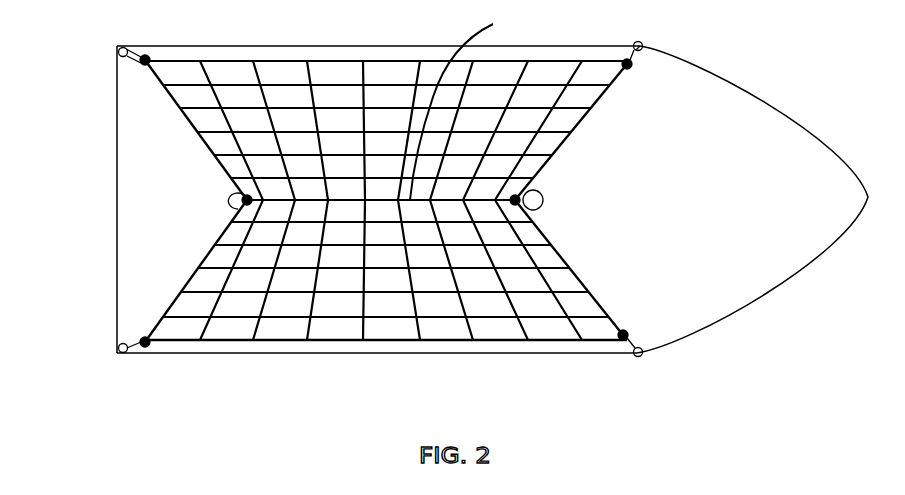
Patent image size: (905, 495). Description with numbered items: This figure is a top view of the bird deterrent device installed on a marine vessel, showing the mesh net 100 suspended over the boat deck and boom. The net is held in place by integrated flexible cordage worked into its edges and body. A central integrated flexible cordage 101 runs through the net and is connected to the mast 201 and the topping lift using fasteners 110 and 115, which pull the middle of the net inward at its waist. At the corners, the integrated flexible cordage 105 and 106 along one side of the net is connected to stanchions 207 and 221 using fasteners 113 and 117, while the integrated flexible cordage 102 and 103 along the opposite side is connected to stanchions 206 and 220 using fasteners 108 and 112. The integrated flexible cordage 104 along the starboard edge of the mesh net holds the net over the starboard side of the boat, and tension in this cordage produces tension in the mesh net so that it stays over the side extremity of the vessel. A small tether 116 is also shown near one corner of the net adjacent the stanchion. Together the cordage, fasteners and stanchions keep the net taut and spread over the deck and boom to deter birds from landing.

The mesh net 100 is at (330, 73).
The integrated flexible cordage 101 is at (467, 105).
The integrated flexible cordage 102 is at (592, 120).
The integrated flexible cordage 103 is at (570, 272).
The integrated flexible cordage 104 is at (345, 342).
The integrated flexible cordage 105 is at (192, 280).
The integrated flexible cordage 106 is at (203, 140).
The fastener 108 is at (641, 52).
The fastener 110 is at (541, 192).
The fastener 112 is at (640, 347).
The fastener 113 is at (145, 348).
The fastener 115 is at (228, 203).
The upper left corner tether 116 is at (129, 68).
The fastener 117 is at (138, 53).
The mast 201 is at (543, 206).
The stanchion 206 is at (636, 356).
The stanchion 207 is at (121, 353).
The stanchion 220 is at (636, 42).
The stanchion 221 is at (121, 48).